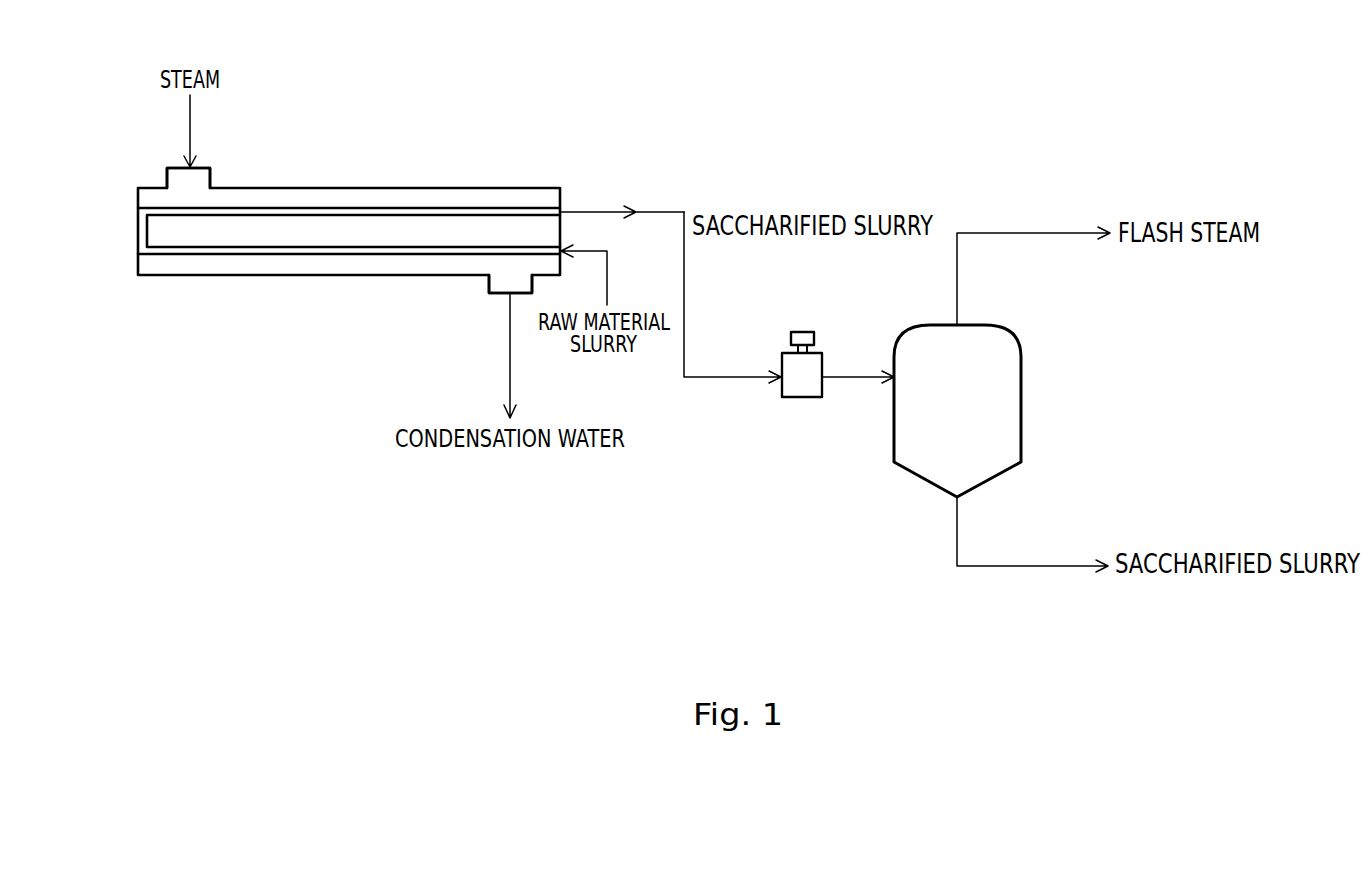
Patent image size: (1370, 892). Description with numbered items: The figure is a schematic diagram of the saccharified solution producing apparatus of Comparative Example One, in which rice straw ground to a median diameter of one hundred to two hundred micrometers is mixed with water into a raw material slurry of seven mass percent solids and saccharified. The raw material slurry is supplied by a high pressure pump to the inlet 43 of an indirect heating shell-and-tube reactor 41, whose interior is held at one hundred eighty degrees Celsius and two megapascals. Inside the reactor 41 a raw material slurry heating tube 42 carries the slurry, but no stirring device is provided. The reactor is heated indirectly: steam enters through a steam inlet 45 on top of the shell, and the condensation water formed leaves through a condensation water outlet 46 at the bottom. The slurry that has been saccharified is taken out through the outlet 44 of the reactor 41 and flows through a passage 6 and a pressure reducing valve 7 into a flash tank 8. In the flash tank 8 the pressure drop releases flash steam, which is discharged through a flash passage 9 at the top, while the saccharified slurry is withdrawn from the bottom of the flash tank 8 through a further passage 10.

The indirect heating shell-and-tube reactor 41 is at (389, 187).
The raw material slurry heating tube 42 is at (513, 207).
The inlet of indirect heating shell-and-tube reactor 43 is at (574, 248).
The outlet of indirect heating shell-and-tube reactor 44 is at (563, 211).
The steam inlet 45 is at (211, 176).
The condensation water outlet 46 is at (490, 295).
The passage 6 is at (685, 293).
The pressure reducing valve 7 is at (821, 353).
The flash tank 8 is at (1022, 388).
The flash passage 9 is at (1030, 232).
The passage 10 is at (1032, 567).